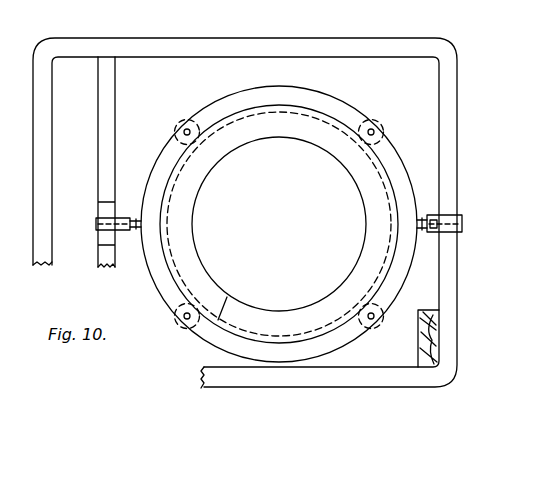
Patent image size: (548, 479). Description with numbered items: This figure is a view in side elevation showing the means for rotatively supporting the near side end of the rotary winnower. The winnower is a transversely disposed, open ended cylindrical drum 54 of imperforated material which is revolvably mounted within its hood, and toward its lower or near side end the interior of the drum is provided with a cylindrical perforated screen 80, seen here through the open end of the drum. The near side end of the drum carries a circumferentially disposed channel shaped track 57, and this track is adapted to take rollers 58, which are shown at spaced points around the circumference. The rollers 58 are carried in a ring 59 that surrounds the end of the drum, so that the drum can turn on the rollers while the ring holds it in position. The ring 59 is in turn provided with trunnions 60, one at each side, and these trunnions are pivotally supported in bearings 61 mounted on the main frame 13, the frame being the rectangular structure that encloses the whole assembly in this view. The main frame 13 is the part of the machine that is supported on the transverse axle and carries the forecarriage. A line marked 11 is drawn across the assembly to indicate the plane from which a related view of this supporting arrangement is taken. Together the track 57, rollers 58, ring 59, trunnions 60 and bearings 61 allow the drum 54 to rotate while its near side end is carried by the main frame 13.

The section line 11 is at (135, 297).
The main frame 13 is at (456, 86).
The cylindrical drum 54 is at (314, 104).
The channel shaped track 57 is at (380, 160).
The rollers 58 is at (181, 119).
The ring 59 is at (252, 96).
The trunnions 60 is at (131, 235).
The bearings 61 is at (122, 214).
The cylindrical perforated screen 80 is at (284, 309).